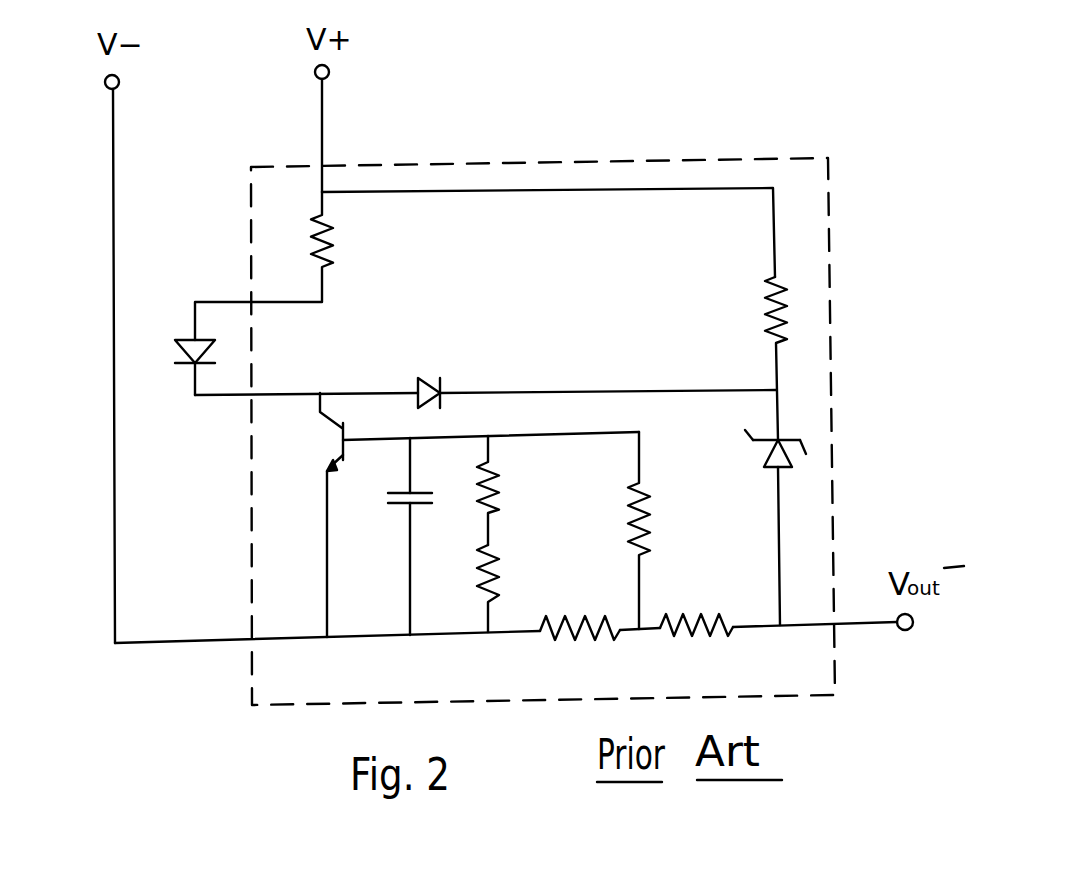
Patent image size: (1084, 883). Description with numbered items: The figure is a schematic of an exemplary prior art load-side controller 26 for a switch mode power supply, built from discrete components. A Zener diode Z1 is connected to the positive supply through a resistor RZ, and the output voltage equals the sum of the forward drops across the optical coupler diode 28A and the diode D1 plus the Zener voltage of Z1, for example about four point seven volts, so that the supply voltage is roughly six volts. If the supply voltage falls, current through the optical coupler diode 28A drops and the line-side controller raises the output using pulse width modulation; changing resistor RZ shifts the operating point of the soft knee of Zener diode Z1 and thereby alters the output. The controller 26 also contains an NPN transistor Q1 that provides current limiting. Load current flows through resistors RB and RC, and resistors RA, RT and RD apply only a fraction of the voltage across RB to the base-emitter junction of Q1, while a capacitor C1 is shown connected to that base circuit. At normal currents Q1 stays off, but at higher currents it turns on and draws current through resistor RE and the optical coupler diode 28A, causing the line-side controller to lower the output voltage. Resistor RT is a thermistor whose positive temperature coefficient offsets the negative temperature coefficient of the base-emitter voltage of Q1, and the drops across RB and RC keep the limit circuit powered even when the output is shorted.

The load-side controller 26 is at (475, 157).
The optical coupler diode 28A is at (188, 322).
The resistor RE is at (343, 243).
The resistor RZ is at (764, 310).
The diode D1 is at (444, 386).
The NPN transistor Q1 is at (330, 447).
The capacitor C1 is at (378, 503).
The thermistor resistor RT is at (505, 470).
The resistor RA is at (507, 556).
The resistor RD is at (657, 530).
The Zener diode Z1 is at (762, 481).
The resistor RB is at (571, 647).
The resistor RC is at (706, 638).